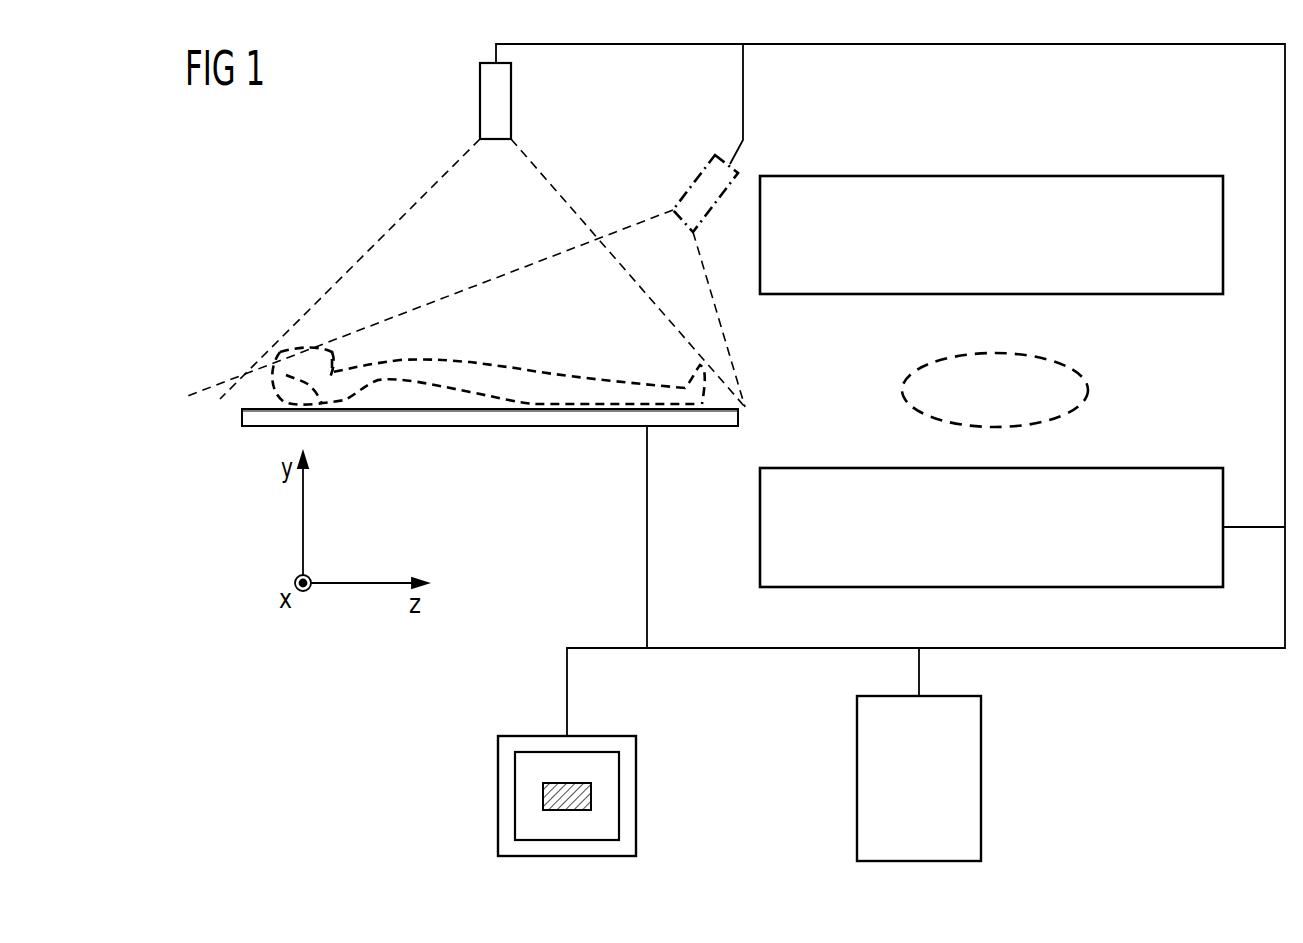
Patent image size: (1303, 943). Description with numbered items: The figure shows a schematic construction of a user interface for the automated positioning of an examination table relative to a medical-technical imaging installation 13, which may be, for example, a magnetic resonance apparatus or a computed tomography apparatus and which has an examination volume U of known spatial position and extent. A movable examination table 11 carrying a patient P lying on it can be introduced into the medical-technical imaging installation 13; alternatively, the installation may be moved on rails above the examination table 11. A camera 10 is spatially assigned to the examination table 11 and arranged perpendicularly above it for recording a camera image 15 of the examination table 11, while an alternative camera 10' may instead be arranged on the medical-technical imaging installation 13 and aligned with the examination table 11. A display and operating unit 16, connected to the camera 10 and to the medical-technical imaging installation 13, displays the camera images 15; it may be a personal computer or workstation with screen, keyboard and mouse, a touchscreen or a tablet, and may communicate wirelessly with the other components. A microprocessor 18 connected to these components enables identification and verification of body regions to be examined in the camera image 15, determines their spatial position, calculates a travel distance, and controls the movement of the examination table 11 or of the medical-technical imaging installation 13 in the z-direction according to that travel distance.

The camera 10 is at (482, 235).
The alternative camera 10' is at (465, 262).
The examination table 11 is at (503, 428).
The medical-technical imaging installation 13 is at (990, 176).
The camera image 15 is at (591, 793).
The display and operating unit 16 is at (533, 736).
The microprocessor 18 is at (981, 778).
The patient P is at (522, 372).
The examination volume U is at (1088, 388).